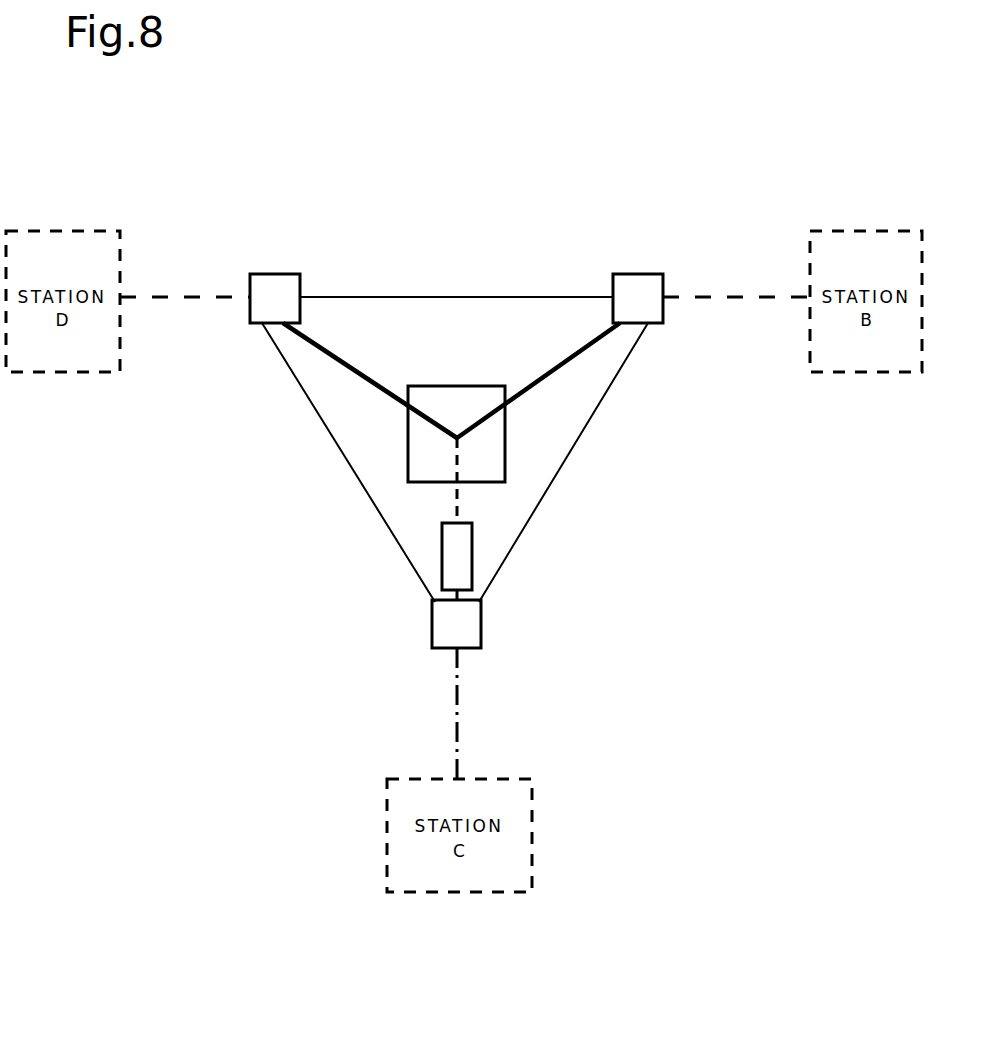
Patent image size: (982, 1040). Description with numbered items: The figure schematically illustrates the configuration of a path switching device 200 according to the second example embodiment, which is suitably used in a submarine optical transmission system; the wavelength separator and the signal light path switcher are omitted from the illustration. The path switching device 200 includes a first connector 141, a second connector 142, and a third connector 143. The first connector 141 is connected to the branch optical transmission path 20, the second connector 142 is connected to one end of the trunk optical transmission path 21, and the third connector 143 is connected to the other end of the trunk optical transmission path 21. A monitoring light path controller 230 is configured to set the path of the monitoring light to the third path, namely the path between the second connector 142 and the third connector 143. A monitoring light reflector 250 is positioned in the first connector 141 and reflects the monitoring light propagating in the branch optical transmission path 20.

The path switching device 200 is at (474, 205).
The third connector 143 is at (275, 274).
The second connector 142 is at (637, 274).
The first connector 141 is at (481, 625).
The monitoring light path controller 230 is at (443, 386).
The monitoring light reflector 250 is at (442, 555).
The trunk optical transmission path 21 is at (158, 296).
The branch optical transmission path 20 is at (461, 714).